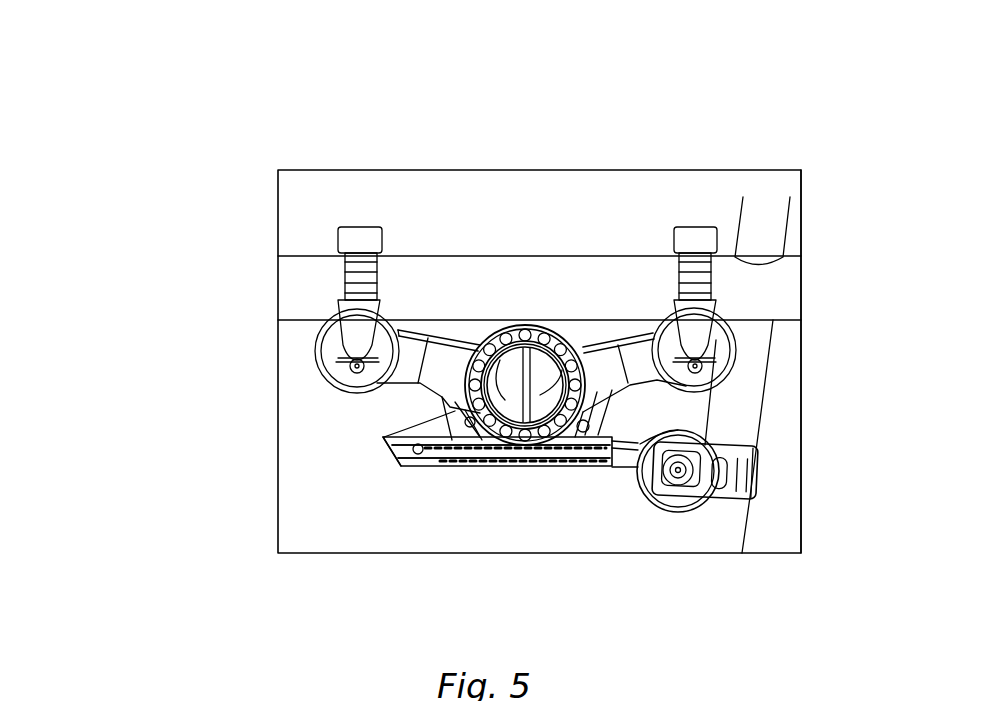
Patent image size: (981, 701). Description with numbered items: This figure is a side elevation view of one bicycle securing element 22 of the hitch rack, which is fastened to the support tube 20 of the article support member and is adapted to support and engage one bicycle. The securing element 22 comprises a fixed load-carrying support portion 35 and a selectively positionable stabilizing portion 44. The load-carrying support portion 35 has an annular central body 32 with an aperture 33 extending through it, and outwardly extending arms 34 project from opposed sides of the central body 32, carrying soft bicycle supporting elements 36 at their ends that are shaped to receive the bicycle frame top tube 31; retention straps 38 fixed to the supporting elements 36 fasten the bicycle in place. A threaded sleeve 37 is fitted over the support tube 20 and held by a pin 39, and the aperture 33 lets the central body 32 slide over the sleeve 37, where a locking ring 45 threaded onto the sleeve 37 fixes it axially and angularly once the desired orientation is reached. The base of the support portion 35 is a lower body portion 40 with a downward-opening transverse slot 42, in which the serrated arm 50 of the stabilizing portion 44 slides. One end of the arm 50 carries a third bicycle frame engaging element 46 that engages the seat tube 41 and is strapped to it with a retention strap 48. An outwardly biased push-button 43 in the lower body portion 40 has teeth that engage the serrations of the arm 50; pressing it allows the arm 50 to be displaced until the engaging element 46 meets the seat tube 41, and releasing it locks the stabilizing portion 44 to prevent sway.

The support tube 20 is at (607, 394).
The bicycle securing element 22 is at (232, 347).
The bicycle frame top tube 31 is at (468, 272).
The annular central body 32 is at (550, 355).
The aperture 33 is at (440, 400).
The outwardly extending arms 34 is at (442, 352).
The load-carrying support portion 35 is at (456, 312).
The bicycle supporting elements 36 is at (277, 323).
The threaded sleeve 37 is at (605, 363).
The retention straps 38 is at (353, 293).
The pin 39 is at (463, 462).
The lower body portion 40 is at (385, 437).
The seat tube 41 is at (720, 535).
The slot 42 is at (420, 472).
The push-button 43 is at (607, 427).
The stabilizing portion 44 is at (608, 500).
The locking ring 45 is at (536, 316).
The bicycle frame engaging element 46 is at (695, 508).
The retention strap 48 is at (743, 505).
The arm 50 is at (590, 465).